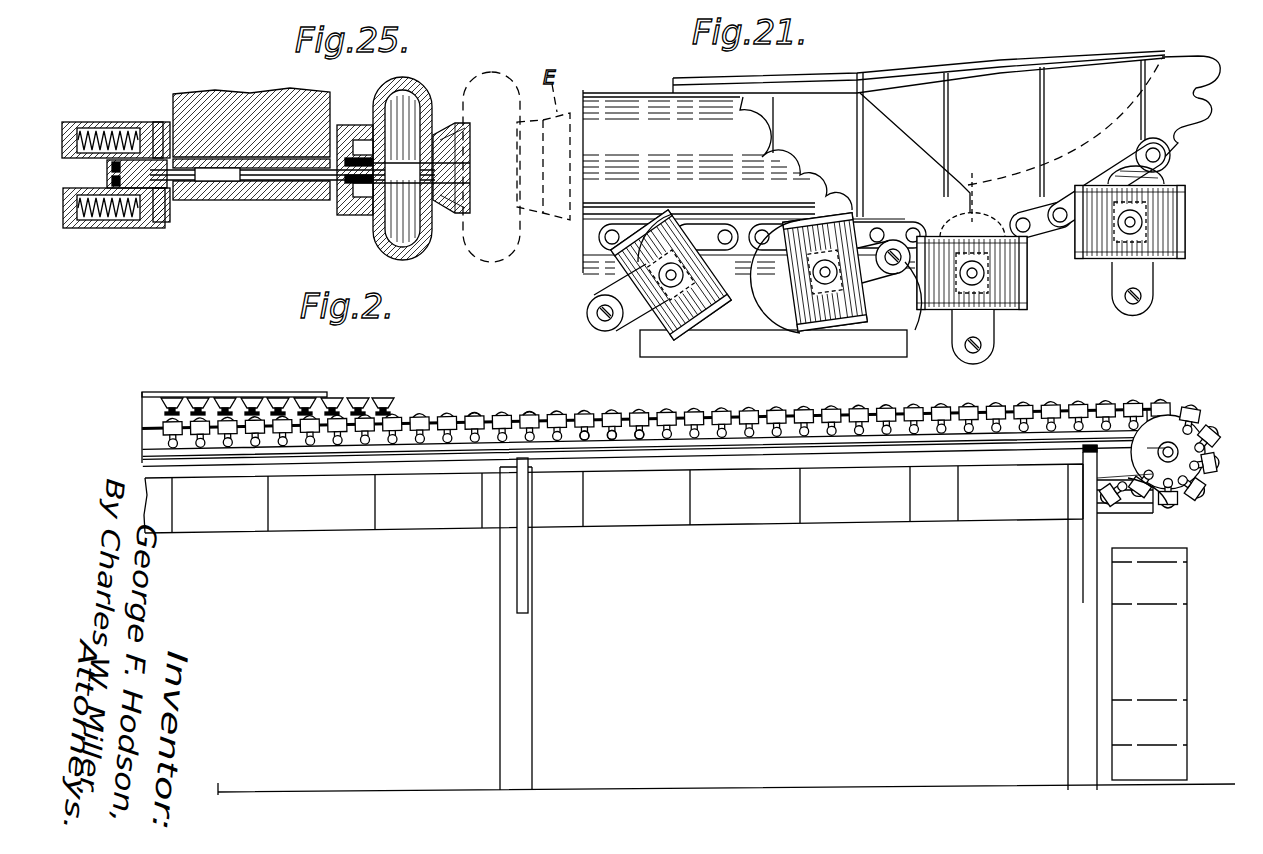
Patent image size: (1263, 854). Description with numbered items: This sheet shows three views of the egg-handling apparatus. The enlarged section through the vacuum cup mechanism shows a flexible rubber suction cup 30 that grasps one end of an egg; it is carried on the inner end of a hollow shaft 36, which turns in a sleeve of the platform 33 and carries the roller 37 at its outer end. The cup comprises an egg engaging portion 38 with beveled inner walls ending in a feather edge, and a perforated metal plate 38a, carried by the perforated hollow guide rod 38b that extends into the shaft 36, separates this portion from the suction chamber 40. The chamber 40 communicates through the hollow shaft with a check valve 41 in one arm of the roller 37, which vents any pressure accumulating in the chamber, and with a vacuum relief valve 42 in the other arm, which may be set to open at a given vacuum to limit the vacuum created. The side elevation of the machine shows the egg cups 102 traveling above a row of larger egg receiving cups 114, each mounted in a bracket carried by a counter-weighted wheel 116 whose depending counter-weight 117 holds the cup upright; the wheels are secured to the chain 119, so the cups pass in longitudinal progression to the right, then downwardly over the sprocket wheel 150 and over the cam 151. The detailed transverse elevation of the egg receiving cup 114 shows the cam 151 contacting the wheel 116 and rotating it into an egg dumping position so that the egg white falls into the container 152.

In FIG. 25, the flexible suction cup 30 is at (466, 86).
In FIG. 25, the platform 33 is at (237, 100).
In FIG. 25, the hollow shaft 36 is at (187, 183).
In FIG. 25, the roller 37 is at (130, 121).
In FIG. 25, the egg engaging portion 38 is at (458, 214).
In FIG. 25, the perforated metal plate 38a is at (461, 160).
In FIG. 25, the perforated hollow guide rod 38b is at (362, 130).
In FIG. 25, the suction chamber 40 is at (403, 222).
In FIG. 25, the check valve 41 is at (97, 128).
In FIG. 25, the vacuum relief valve 42 is at (95, 230).
In FIG. 2, the egg cup 102 is at (374, 402).
In FIG. 21, the egg receiving cup 114 is at (660, 338).
In FIG. 21, the counter-weighted wheel 116 is at (783, 312).
In FIG. 2, the counter-weighted wheel 116 is at (527, 414).
In FIG. 21, the counter-weight 117 is at (588, 317).
In FIG. 2, the counter-weight 117 is at (640, 440).
In FIG. 21, the chain 119 is at (1045, 242).
In FIG. 21, the sprocket wheel 150 is at (1180, 116).
In FIG. 2, the sprocket wheel 150 is at (1172, 422).
In FIG. 21, the cam 151 is at (912, 336).
In FIG. 2, the cam 151 is at (1140, 503).
In FIG. 2, the container 152 is at (1170, 593).